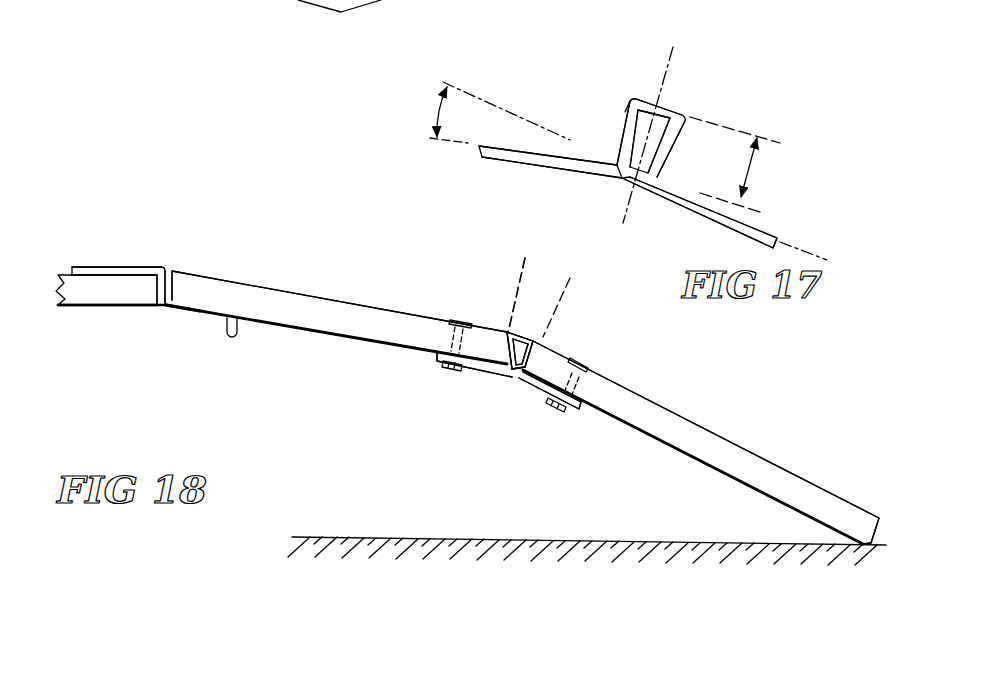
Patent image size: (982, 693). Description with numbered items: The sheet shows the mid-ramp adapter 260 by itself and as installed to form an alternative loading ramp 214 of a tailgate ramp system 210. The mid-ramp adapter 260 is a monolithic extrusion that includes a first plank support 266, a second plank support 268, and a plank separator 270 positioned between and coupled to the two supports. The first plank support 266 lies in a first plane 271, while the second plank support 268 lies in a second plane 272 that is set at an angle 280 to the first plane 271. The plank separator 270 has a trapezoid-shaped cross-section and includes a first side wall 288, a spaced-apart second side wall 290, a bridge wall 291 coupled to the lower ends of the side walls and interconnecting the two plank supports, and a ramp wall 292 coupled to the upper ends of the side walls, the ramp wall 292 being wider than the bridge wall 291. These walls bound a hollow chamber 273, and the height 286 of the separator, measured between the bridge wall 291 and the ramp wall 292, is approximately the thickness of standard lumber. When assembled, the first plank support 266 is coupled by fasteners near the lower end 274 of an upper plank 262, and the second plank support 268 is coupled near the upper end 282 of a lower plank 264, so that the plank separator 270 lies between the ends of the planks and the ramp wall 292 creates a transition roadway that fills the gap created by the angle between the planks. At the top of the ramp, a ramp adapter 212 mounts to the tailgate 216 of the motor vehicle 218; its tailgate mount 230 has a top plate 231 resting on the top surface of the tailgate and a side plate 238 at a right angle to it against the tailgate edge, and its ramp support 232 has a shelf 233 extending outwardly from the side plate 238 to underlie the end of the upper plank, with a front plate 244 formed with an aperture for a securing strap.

In FIG. 18, the tailgate ramp system 210 is at (224, 256).
In FIG. 18, the ramp adapter 212 is at (105, 270).
In FIG. 18, the loading ramp 214 is at (670, 403).
In FIG. 18, the tailgate 216 is at (125, 314).
In FIG. 18, the motor vehicle 218 is at (82, 314).
In FIG. 18, the tailgate mount 230 is at (141, 264).
In FIG. 18, the top plate 231 is at (83, 266).
In FIG. 18, the ramp support 232 is at (185, 315).
In FIG. 18, the shelf 233 is at (210, 321).
In FIG. 18, the side plate 238 is at (170, 290).
In FIG. 18, the front plate 244 is at (238, 334).
In FIG. 17, the mid-ramp adapter 260 is at (757, 125).
In FIG. 18, the mid-ramp adapter 260 is at (499, 381).
In FIG. 18, the upper plank 262 is at (355, 327).
In FIG. 18, the lower plank 264 is at (705, 440).
In FIG. 17, the first plank support 266 is at (538, 167).
In FIG. 18, the first plank support 266 is at (437, 357).
In FIG. 17, the second plank support 268 is at (707, 208).
In FIG. 18, the second plank support 268 is at (537, 394).
In FIG. 17, the plank separator 270 is at (641, 95).
In FIG. 18, the plank separator 270 is at (545, 340).
In FIG. 17, the first plane 271 is at (420, 137).
In FIG. 17, the second plane 272 is at (820, 252).
In FIG. 17, the hollow chamber 273 is at (636, 126).
In FIG. 18, the lower end of upper plank 274 is at (500, 336).
In FIG. 17, the angle 280 is at (442, 98).
In FIG. 18, the upper end of lower plank 282 is at (526, 372).
In FIG. 17, the height 286 is at (750, 170).
In FIG. 17, the first side wall 288 is at (617, 153).
In FIG. 18, the first side wall 288 is at (503, 349).
In FIG. 17, the second side wall 290 is at (677, 140).
In FIG. 18, the second side wall 290 is at (534, 360).
In FIG. 17, the bridge wall 291 is at (627, 180).
In FIG. 17, the ramp wall 292 is at (668, 108).
In FIG. 18, the ramp wall 292 is at (526, 337).